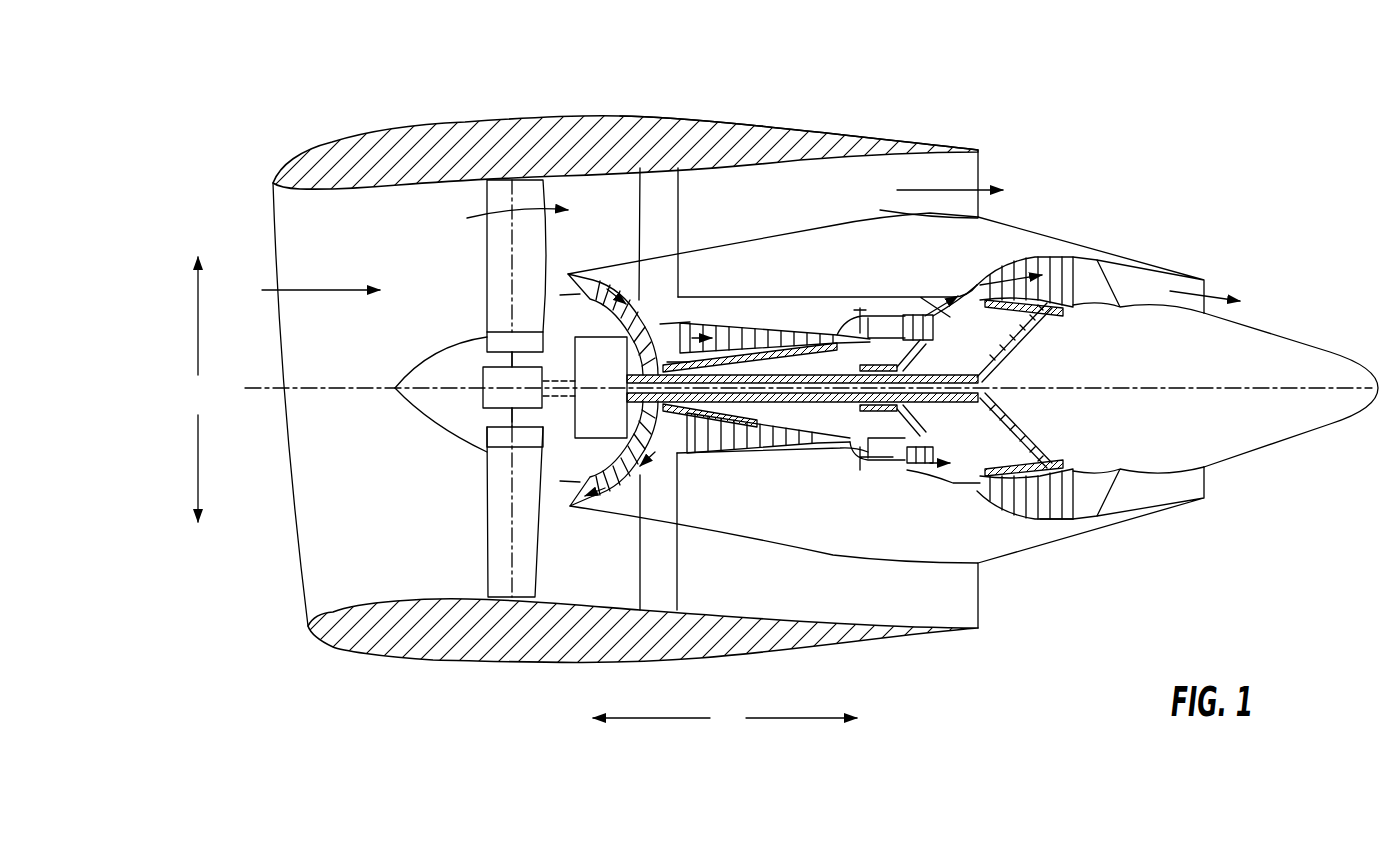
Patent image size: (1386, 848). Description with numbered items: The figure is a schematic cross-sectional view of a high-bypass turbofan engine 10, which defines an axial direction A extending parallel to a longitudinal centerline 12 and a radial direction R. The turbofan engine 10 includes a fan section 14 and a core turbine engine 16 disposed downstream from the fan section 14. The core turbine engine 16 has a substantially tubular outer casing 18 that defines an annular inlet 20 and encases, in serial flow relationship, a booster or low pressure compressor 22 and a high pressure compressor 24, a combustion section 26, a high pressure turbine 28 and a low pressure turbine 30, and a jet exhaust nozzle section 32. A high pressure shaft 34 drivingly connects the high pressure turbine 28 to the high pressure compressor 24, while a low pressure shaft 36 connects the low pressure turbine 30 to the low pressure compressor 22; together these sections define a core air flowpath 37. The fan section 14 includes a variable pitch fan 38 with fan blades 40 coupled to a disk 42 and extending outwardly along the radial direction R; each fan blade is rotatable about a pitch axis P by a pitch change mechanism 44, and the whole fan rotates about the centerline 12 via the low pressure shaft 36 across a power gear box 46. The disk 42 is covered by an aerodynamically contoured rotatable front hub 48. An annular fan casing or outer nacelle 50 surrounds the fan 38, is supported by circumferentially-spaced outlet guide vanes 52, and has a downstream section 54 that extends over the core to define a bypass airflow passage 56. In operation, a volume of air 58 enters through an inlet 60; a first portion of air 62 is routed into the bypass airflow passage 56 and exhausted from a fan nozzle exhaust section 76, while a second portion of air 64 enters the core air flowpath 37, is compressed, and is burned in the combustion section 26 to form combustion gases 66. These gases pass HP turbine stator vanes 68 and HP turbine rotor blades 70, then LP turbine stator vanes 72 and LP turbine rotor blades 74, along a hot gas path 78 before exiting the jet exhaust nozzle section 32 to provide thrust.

The turbofan engine 10 is at (1121, 128).
The longitudinal centerline 12 is at (1145, 386).
The fan section 14 is at (445, 203).
The core turbine engine 16 is at (797, 264).
The outer casing 18 is at (837, 555).
The annular inlet 20 is at (585, 484).
The low pressure compressor 22 is at (627, 440).
The high pressure compressor 24 is at (707, 452).
The combustion section 26 is at (876, 464).
The high pressure turbine 28 is at (1020, 448).
The low pressure turbine 30 is at (1063, 518).
The jet exhaust nozzle section 32 is at (1121, 500).
The high pressure shaft 34 is at (903, 345).
The low pressure shaft 36 is at (1000, 372).
The core air flowpath 37 is at (674, 458).
The variable pitch fan 38 is at (452, 446).
The fan blades 40 is at (487, 540).
The disk 42 is at (503, 343).
The pitch change mechanism 44 is at (483, 372).
The power gear box 46 is at (610, 352).
The front hub 48 is at (407, 405).
The outer nacelle 50 is at (533, 663).
The outlet guide vanes 52 is at (680, 200).
The downstream section 54 is at (928, 145).
The bypass airflow passage 56 is at (850, 203).
The volume of air 58 is at (327, 287).
The inlet 60 is at (306, 602).
The first portion of air 62 is at (498, 228).
The second portion of air 64 is at (568, 272).
The combustion gases 66 is at (1020, 273).
The HP turbine stator vanes 68 is at (893, 468).
The HP turbine rotor blades 70 is at (975, 428).
The LP turbine stator vanes 72 is at (983, 505).
The LP turbine rotor blades 74 is at (997, 513).
The fan nozzle exhaust section 76 is at (968, 176).
The hot gas path 78 is at (777, 296).
The pitch axis P is at (542, 187).
The radial direction R is at (199, 389).
The axial direction A is at (725, 717).